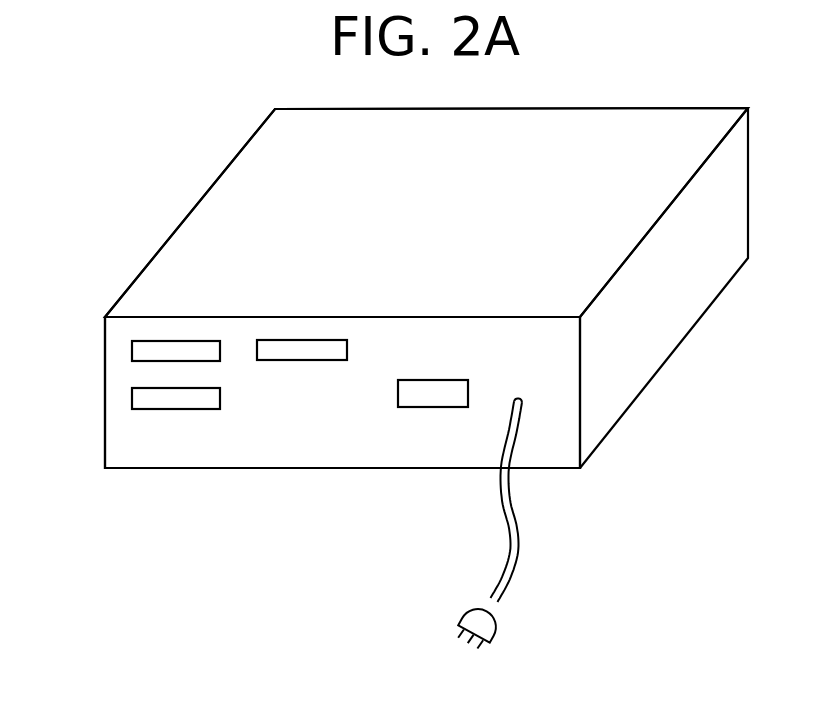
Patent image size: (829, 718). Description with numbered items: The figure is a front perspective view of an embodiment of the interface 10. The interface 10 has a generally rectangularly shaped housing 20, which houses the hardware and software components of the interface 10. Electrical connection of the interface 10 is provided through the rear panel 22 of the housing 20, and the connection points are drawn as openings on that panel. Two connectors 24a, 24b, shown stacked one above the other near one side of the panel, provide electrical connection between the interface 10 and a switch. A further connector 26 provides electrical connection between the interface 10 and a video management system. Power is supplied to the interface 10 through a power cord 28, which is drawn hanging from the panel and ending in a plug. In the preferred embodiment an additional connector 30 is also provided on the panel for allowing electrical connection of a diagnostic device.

The interface 10 is at (148, 200).
The housing 20 is at (376, 206).
The rear panel 22 is at (474, 344).
The connector 24a is at (130, 348).
The connector 24b is at (130, 399).
The connector 26 is at (446, 408).
The power cord 28 is at (509, 540).
The additional connector 30 is at (300, 362).